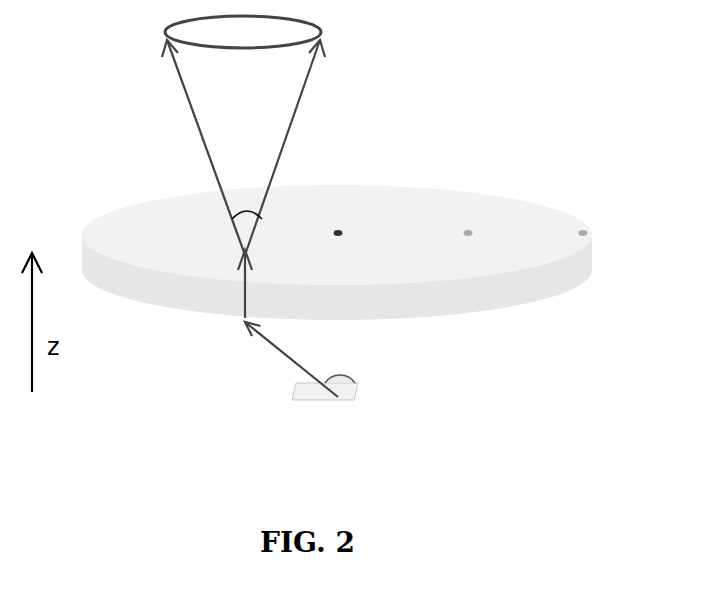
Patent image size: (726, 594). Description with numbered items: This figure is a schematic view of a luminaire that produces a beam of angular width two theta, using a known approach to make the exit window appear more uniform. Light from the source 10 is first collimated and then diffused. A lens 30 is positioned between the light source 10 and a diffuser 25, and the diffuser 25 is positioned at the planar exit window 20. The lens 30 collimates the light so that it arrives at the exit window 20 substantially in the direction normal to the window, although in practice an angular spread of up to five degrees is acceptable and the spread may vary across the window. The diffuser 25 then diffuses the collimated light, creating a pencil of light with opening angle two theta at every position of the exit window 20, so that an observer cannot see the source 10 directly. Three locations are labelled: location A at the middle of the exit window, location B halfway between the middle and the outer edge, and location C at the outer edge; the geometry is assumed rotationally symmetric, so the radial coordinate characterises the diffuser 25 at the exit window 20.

The light source 10 is at (338, 387).
The exit window 20 is at (162, 195).
The diffuser 25 is at (397, 217).
The lens 30 is at (473, 300).